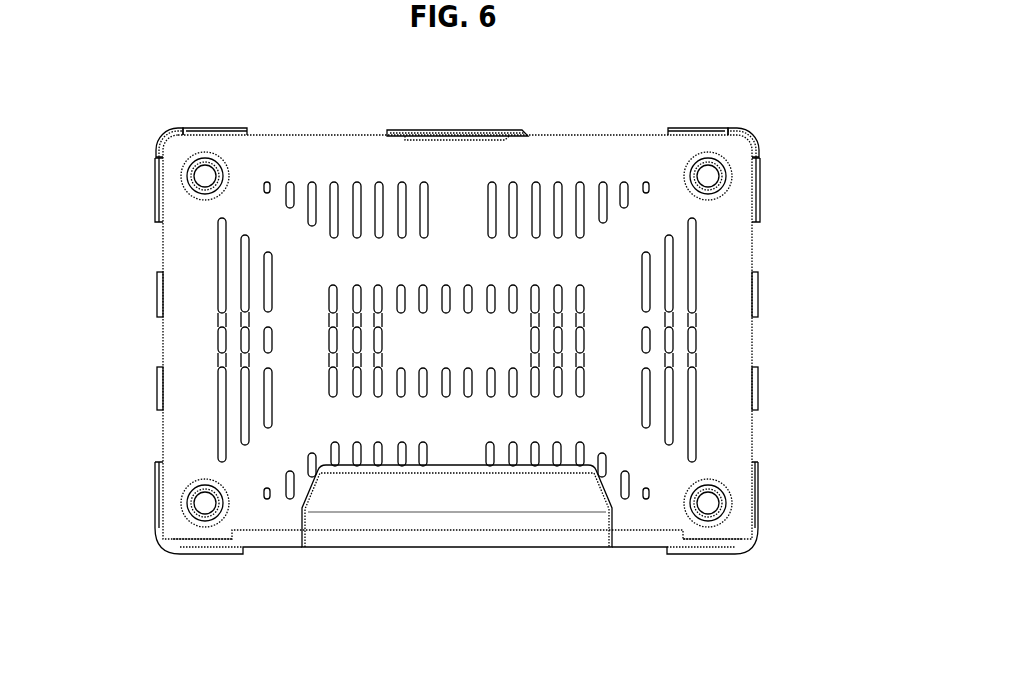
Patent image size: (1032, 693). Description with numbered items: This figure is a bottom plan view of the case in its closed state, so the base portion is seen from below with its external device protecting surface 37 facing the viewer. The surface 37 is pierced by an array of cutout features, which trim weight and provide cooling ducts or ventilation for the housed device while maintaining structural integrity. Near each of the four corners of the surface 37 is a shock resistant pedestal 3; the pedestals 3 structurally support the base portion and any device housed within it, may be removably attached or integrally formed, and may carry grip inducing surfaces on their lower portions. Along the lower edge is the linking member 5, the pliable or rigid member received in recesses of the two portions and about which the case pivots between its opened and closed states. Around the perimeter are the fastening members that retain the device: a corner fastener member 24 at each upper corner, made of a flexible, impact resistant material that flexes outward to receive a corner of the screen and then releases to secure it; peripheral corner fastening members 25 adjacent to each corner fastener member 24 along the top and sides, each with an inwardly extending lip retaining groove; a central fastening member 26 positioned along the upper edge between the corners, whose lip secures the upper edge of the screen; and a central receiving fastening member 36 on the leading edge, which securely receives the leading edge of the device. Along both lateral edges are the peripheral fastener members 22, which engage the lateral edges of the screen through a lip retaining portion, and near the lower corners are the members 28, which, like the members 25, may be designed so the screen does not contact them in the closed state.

The shock resistant pedestal 3 is at (186, 192).
The linking member 5 is at (430, 523).
The peripheral fastener member 22 is at (157, 388).
The corner fastener member 24 is at (172, 133).
The peripheral corner fastening member 25 is at (215, 128).
The central fastening member 26 is at (430, 129).
The member 28 is at (157, 498).
The central receiving fastening member 36 is at (432, 140).
The external device protecting surface 37 is at (624, 182).